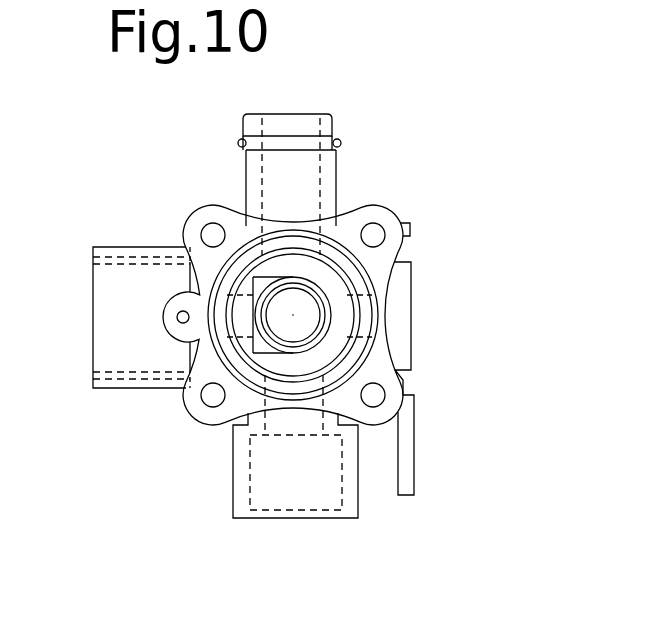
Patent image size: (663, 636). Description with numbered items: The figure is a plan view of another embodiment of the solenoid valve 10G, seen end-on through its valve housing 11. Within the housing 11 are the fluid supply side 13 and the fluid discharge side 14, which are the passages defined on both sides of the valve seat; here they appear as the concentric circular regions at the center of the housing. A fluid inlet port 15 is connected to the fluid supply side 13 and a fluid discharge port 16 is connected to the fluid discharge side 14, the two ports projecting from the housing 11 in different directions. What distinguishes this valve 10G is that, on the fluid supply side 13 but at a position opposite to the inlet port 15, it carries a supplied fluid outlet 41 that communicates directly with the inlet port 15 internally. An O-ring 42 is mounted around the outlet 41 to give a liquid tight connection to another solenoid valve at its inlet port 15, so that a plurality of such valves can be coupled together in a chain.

The solenoid valve 10G is at (426, 275).
The valve housing 11 is at (403, 380).
The fluid supply side 13 is at (345, 335).
The fluid discharge side 14 is at (312, 313).
The fluid inlet port 15 is at (303, 518).
The fluid discharge port 16 is at (93, 315).
The supplied fluid outlet 41 is at (282, 114).
The O-ring 42 is at (340, 143).